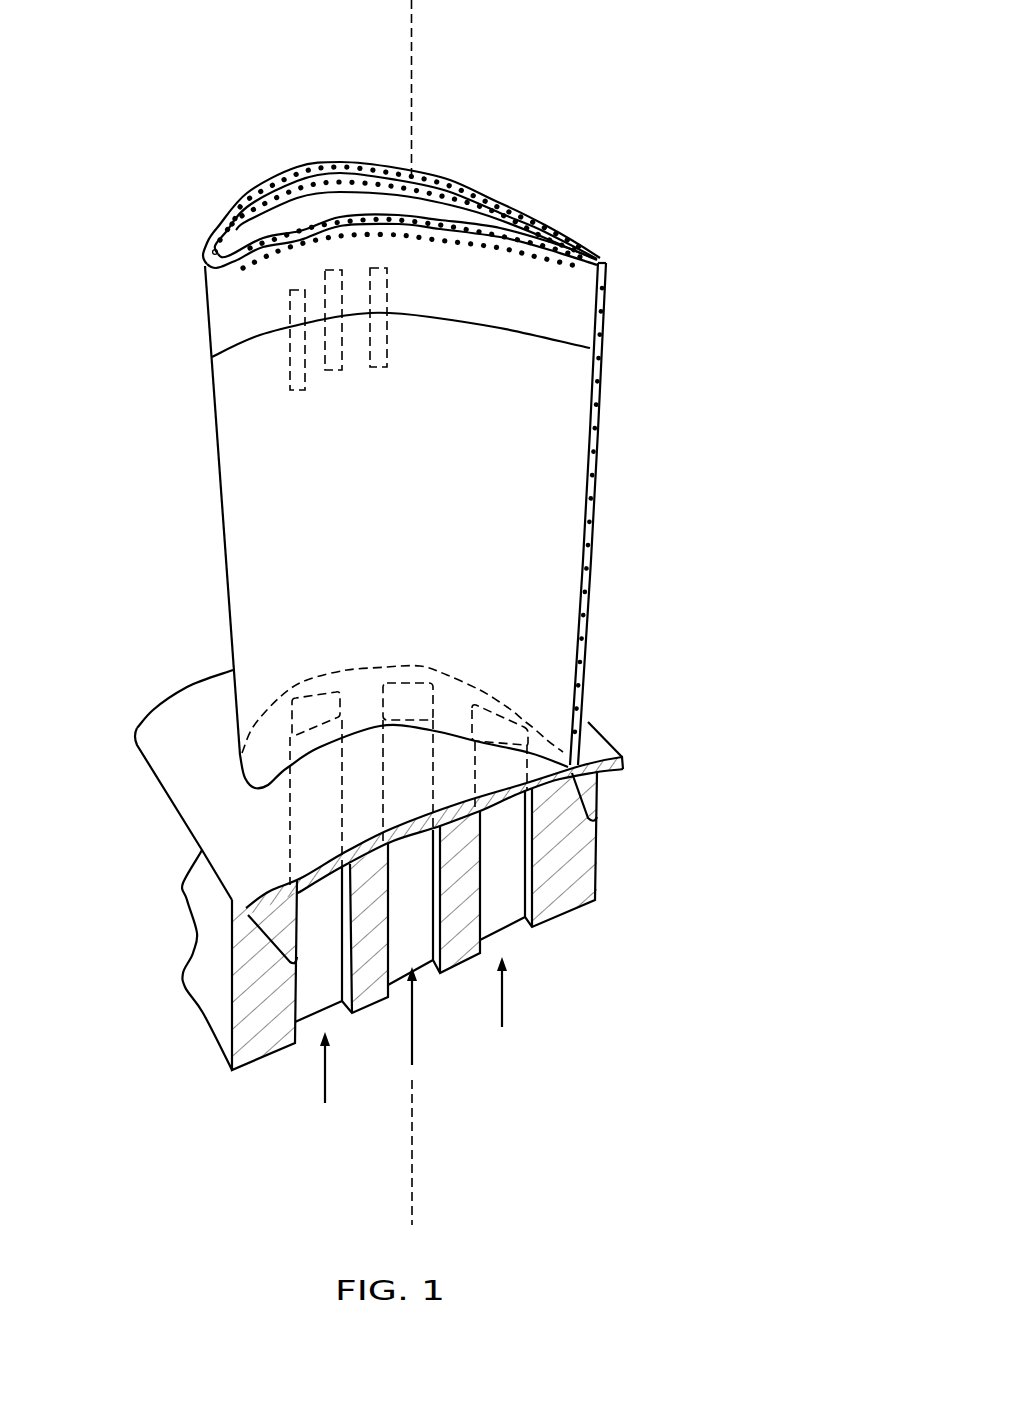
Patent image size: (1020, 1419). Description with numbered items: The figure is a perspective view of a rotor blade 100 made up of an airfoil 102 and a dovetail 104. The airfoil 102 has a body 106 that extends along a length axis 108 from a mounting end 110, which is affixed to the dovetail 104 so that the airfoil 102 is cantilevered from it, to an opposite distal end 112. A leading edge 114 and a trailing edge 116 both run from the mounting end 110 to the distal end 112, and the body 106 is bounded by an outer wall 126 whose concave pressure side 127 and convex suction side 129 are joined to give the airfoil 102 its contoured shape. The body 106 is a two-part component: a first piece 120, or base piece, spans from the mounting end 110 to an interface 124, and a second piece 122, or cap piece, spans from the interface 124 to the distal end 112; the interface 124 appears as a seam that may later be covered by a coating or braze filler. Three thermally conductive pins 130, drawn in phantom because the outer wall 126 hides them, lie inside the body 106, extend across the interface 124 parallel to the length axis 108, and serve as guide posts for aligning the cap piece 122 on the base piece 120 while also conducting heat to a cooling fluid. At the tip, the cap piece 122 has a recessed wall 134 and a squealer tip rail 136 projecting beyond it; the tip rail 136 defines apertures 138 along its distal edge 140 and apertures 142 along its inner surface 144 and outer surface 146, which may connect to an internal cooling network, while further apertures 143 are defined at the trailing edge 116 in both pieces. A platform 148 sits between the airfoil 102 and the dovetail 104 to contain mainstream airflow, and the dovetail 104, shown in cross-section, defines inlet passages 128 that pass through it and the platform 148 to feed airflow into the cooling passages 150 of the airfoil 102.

The rotor blade 100 is at (252, 67).
The airfoil 102 is at (197, 430).
The dovetail 104 is at (210, 940).
The body 106 is at (250, 462).
The length axis 108 is at (413, 26).
The mounting end 110 is at (556, 743).
The distal end 112 is at (618, 246).
The leading edge 114 is at (208, 300).
The trailing edge 116 is at (592, 420).
The first piece 120 is at (535, 478).
The second piece 122 is at (558, 297).
The interface 124 is at (212, 355).
The outer wall 126 is at (230, 258).
The concave-shaped exterior surface 127 is at (287, 555).
The inlet passages 128 is at (325, 1090).
The convex-shaped exterior surface 129 is at (247, 192).
The thermally conductive pins 130 is at (297, 375).
The recessed wall 134 is at (425, 218).
The tip rail 136 is at (378, 175).
The apertures 138 is at (330, 165).
The distal edge 140 is at (530, 210).
The apertures 142 is at (432, 226).
The apertures 143 is at (602, 373).
The inner surface 144 is at (247, 209).
The outer surface 146 is at (586, 275).
The platform 148 is at (178, 705).
The cooling passages 150 is at (305, 692).